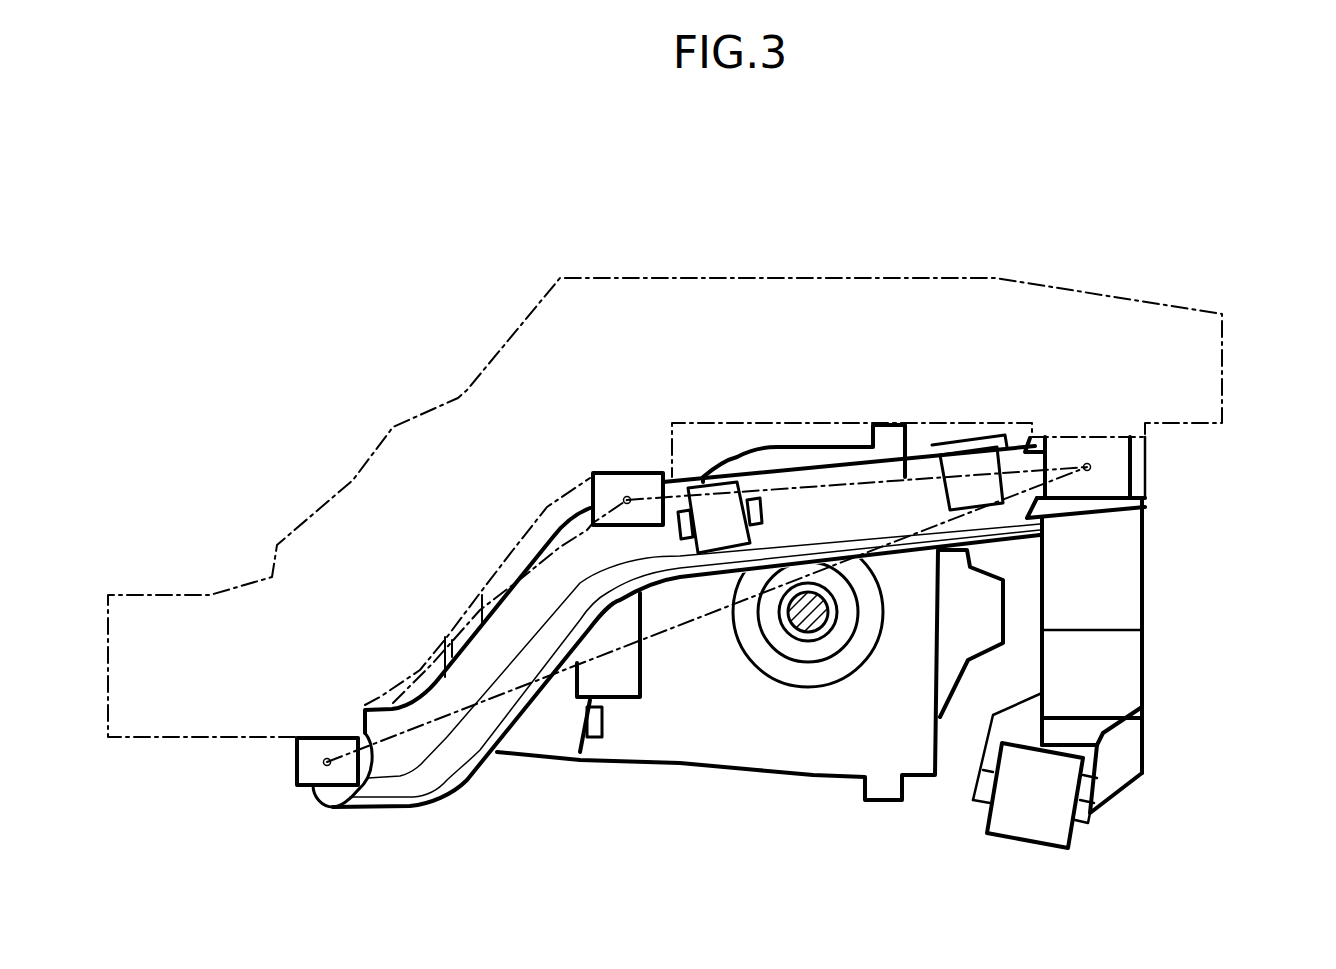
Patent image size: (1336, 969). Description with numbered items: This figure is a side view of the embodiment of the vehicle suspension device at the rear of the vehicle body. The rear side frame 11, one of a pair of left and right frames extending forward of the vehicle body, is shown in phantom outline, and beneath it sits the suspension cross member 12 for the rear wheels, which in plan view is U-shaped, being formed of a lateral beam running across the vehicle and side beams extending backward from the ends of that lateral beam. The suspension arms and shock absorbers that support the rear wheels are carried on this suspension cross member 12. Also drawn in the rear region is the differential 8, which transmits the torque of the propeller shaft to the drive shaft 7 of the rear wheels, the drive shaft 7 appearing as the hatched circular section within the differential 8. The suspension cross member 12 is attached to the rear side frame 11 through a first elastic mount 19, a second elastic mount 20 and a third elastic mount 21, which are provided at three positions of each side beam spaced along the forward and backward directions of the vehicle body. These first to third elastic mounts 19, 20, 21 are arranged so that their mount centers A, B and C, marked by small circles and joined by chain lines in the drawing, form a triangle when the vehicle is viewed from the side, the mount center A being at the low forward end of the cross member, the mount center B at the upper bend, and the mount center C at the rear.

The drive shaft 7 is at (808, 633).
The differential 8 is at (757, 770).
The rear side frame 11 is at (195, 595).
The suspension cross member 12 is at (536, 742).
The first elastic mount 19 is at (300, 787).
The second elastic mount 20 is at (647, 480).
The third elastic mount 21 is at (1122, 473).
The mount center A is at (323, 762).
The mount center B is at (627, 496).
The mount center C is at (1087, 463).